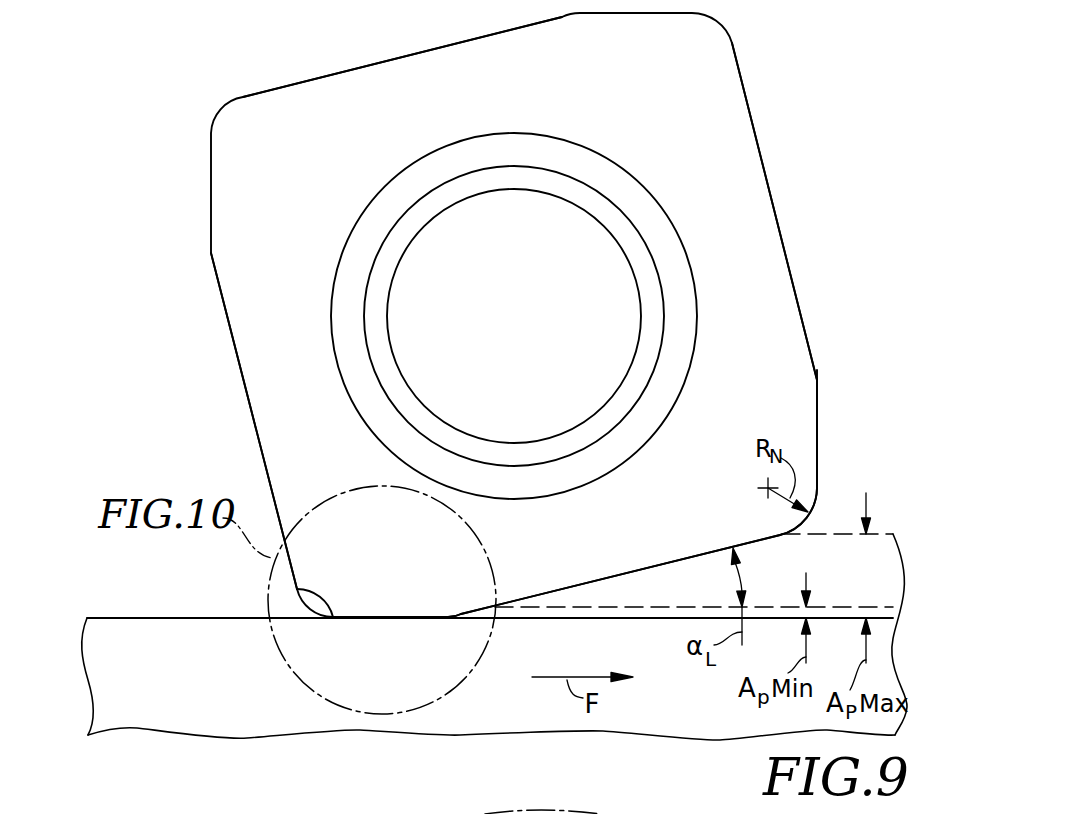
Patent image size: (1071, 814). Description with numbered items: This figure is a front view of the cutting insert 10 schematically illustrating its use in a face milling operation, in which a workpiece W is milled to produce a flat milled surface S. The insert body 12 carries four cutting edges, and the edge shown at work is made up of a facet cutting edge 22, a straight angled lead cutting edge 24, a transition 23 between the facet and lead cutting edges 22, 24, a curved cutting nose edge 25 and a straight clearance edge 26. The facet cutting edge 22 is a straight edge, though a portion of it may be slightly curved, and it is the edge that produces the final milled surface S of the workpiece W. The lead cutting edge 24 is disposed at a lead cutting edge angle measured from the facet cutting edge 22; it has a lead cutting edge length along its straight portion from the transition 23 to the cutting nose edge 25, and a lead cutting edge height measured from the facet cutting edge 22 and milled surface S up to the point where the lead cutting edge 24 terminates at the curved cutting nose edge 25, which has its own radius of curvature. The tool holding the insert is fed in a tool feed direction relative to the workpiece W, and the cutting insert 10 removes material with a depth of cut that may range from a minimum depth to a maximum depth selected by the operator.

The cutting insert 10 is at (172, 92).
The insert body 12 is at (321, 160).
The facet cutting edge 22 is at (817, 400).
The transition 23 is at (817, 380).
The straight angled lead cutting edge 24 is at (757, 133).
The curved cutting nose edge 25 is at (810, 510).
The straight clearance edge 26 is at (817, 450).
The workpiece W is at (98, 637).
The flat milled surface S is at (165, 618).